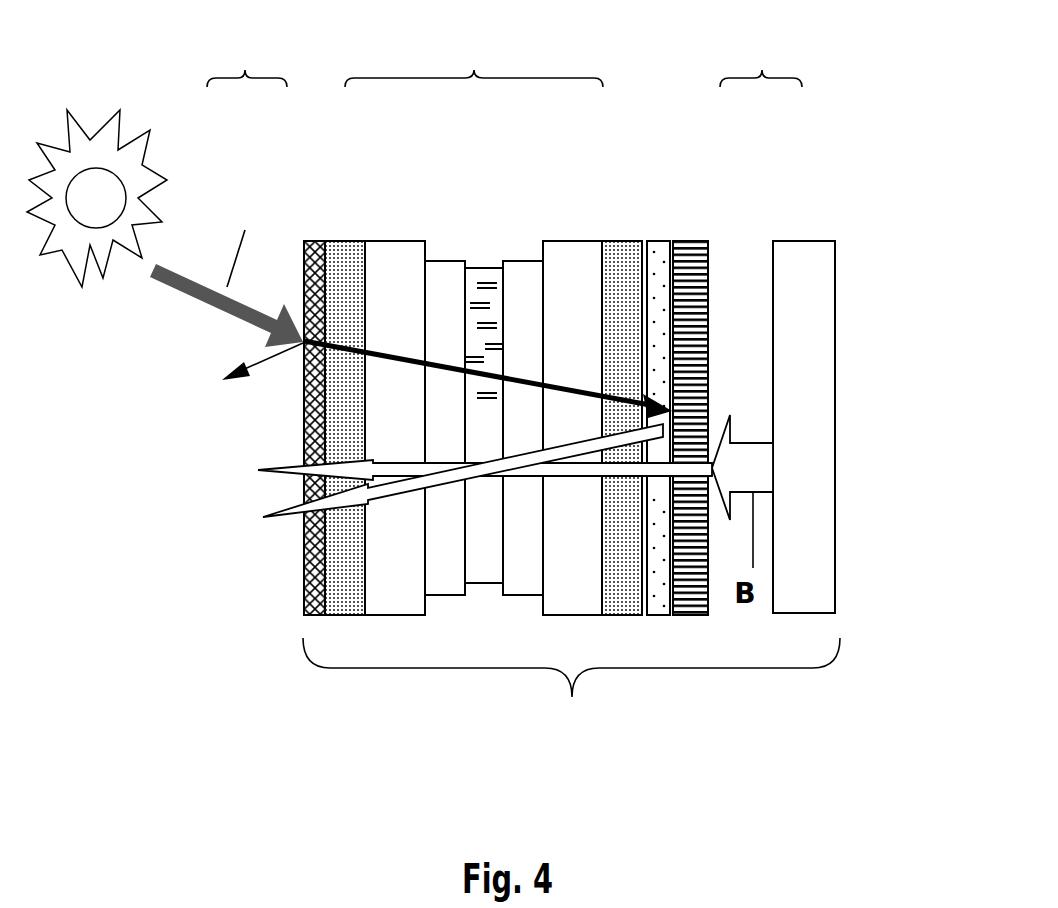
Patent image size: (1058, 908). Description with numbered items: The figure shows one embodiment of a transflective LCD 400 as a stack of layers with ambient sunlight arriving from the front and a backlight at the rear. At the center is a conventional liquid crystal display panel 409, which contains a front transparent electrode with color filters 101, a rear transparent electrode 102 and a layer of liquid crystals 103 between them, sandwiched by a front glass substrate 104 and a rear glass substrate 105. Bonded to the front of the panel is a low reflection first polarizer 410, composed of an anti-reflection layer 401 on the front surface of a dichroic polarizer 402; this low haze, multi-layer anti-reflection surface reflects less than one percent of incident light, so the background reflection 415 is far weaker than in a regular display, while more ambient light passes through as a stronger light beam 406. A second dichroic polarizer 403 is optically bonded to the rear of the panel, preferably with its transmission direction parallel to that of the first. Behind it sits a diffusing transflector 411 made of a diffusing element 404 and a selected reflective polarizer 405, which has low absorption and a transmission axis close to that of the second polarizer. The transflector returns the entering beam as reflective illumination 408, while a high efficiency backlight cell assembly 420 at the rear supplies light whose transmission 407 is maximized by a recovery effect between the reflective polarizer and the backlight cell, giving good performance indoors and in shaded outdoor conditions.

The front transparent electrode with color filters 101 is at (445, 267).
The rear transparent electrode 102 is at (523, 268).
The layer of liquid crystals 103 is at (484, 267).
The front glass substrate 104 is at (385, 248).
The rear glass substrate 105 is at (563, 250).
The transflective LCD 400 is at (571, 689).
The anti-reflection layer 401 is at (305, 242).
The dichroic polarizer 402 is at (345, 248).
The second dichroic polarizer 403 is at (623, 250).
The diffusing element 404 is at (662, 250).
The reflective polarizer 405 is at (702, 248).
The light beam 406 is at (397, 362).
The maximized transmission 407 is at (287, 473).
The reflective illumination 408 is at (278, 520).
The liquid crystal display panel 409 is at (474, 58).
The low reflection first polarizer 410 is at (247, 58).
The diffusing transflector 411 is at (761, 58).
The background reflection 415 is at (228, 373).
The backlight cell assembly 420 is at (815, 436).